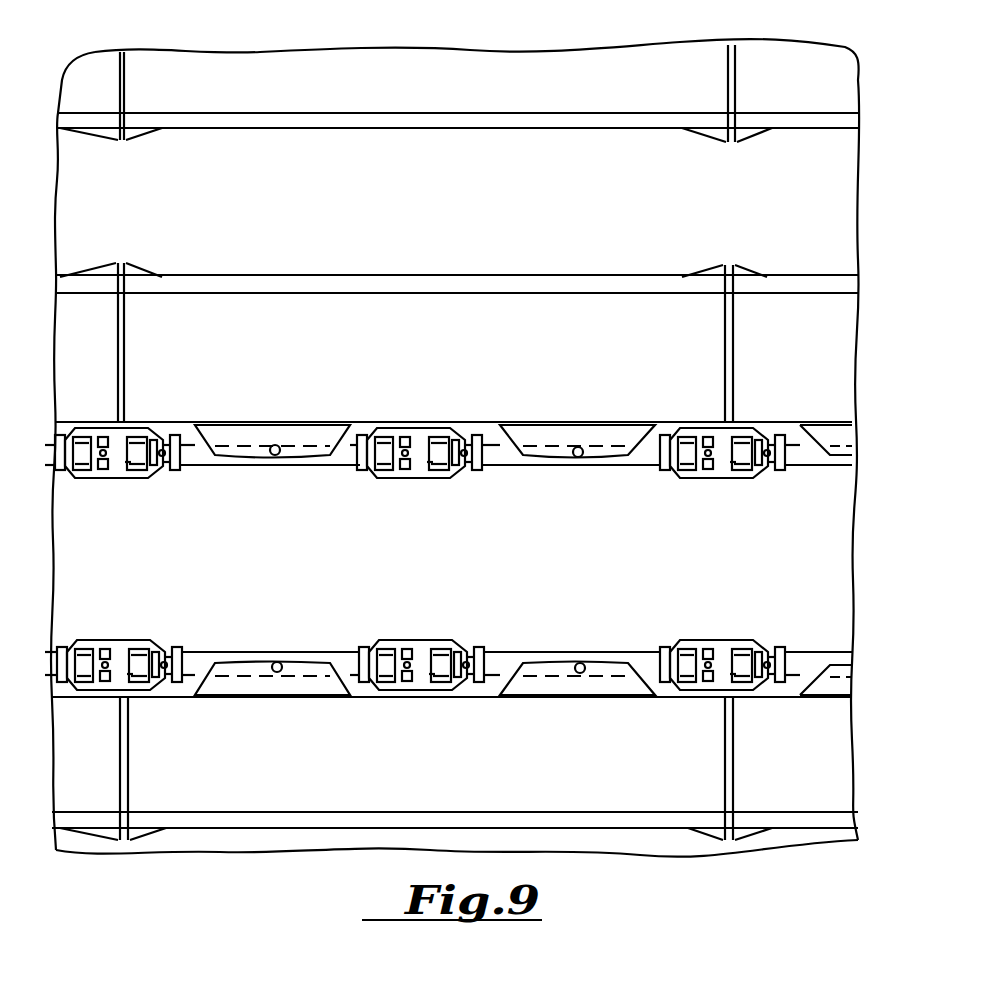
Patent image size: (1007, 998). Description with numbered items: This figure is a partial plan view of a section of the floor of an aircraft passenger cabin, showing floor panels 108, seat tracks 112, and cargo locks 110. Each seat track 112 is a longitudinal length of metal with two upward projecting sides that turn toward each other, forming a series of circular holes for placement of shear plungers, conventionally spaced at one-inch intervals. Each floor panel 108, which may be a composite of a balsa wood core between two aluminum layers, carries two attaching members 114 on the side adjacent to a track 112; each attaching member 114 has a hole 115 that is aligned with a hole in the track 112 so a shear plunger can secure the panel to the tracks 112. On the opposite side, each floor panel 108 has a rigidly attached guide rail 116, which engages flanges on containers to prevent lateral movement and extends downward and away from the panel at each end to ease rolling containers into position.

The floor panel 108 is at (695, 72).
The cargo lock 110 is at (117, 470).
The seat track 112 is at (807, 460).
The attaching member 114 is at (230, 458).
The hole 115 is at (277, 460).
The guide rail 116 is at (577, 128).